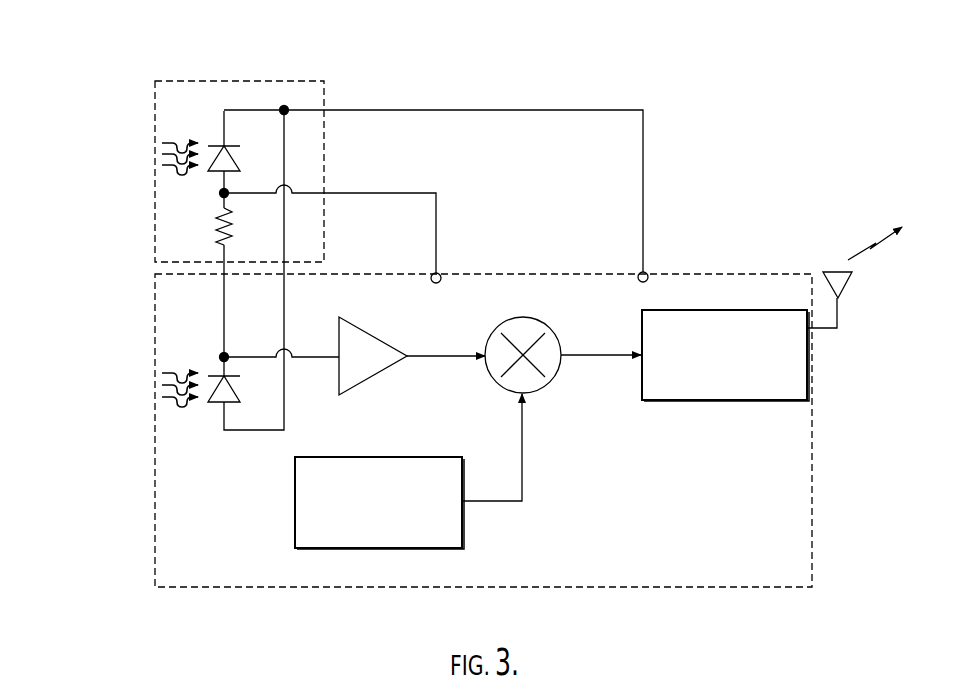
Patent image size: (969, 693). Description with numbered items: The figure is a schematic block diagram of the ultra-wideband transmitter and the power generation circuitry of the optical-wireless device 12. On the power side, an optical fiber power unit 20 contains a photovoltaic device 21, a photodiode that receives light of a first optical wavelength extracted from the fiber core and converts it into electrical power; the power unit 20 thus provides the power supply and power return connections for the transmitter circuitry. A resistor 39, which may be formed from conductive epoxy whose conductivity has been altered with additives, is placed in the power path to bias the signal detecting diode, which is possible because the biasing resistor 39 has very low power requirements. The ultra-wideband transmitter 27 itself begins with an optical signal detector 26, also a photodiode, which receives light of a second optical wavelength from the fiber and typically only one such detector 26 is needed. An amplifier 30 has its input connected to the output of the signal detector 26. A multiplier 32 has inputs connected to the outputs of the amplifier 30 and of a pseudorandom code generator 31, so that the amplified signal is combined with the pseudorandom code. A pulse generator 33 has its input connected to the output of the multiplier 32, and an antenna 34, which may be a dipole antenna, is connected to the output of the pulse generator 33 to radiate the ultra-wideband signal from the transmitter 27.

The optical-wireless device 12 is at (748, 136).
The optical fiber power unit 20 is at (326, 83).
The photovoltaic device 21 is at (224, 146).
The resistor 39 is at (214, 218).
The optical signal detector 26 is at (218, 404).
The amplifier 30 is at (370, 330).
The multiplier 32 is at (522, 318).
The pulse generator 33 is at (735, 310).
The antenna 34 is at (836, 272).
The pseudorandom code generator 31 is at (360, 548).
The ultra-wideband transmitter 27 is at (683, 587).